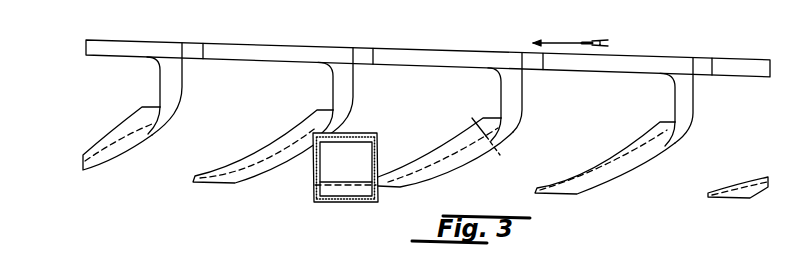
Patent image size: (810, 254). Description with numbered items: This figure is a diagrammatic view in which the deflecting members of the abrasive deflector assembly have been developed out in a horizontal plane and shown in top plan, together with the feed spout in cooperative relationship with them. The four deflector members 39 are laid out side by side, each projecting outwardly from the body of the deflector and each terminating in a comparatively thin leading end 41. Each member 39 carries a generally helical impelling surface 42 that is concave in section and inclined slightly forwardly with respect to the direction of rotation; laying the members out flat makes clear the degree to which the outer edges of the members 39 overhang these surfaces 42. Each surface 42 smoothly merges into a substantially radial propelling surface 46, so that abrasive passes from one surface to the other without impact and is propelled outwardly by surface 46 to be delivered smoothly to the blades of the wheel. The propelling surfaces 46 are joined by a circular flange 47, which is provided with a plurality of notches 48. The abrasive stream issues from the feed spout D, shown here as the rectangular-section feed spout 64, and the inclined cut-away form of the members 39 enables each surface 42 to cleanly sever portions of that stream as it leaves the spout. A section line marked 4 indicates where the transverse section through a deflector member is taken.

The circular flange 47 is at (424, 64).
The propelling surface 46 is at (509, 87).
The deflector member 39 is at (262, 162).
The impelling surface 42 is at (452, 156).
The notch 48 is at (193, 51).
The section line 4- 4 is at (478, 107).
The leading end 41 is at (708, 195).
The feed spout D is at (310, 203).
The feed spout 64 is at (346, 190).